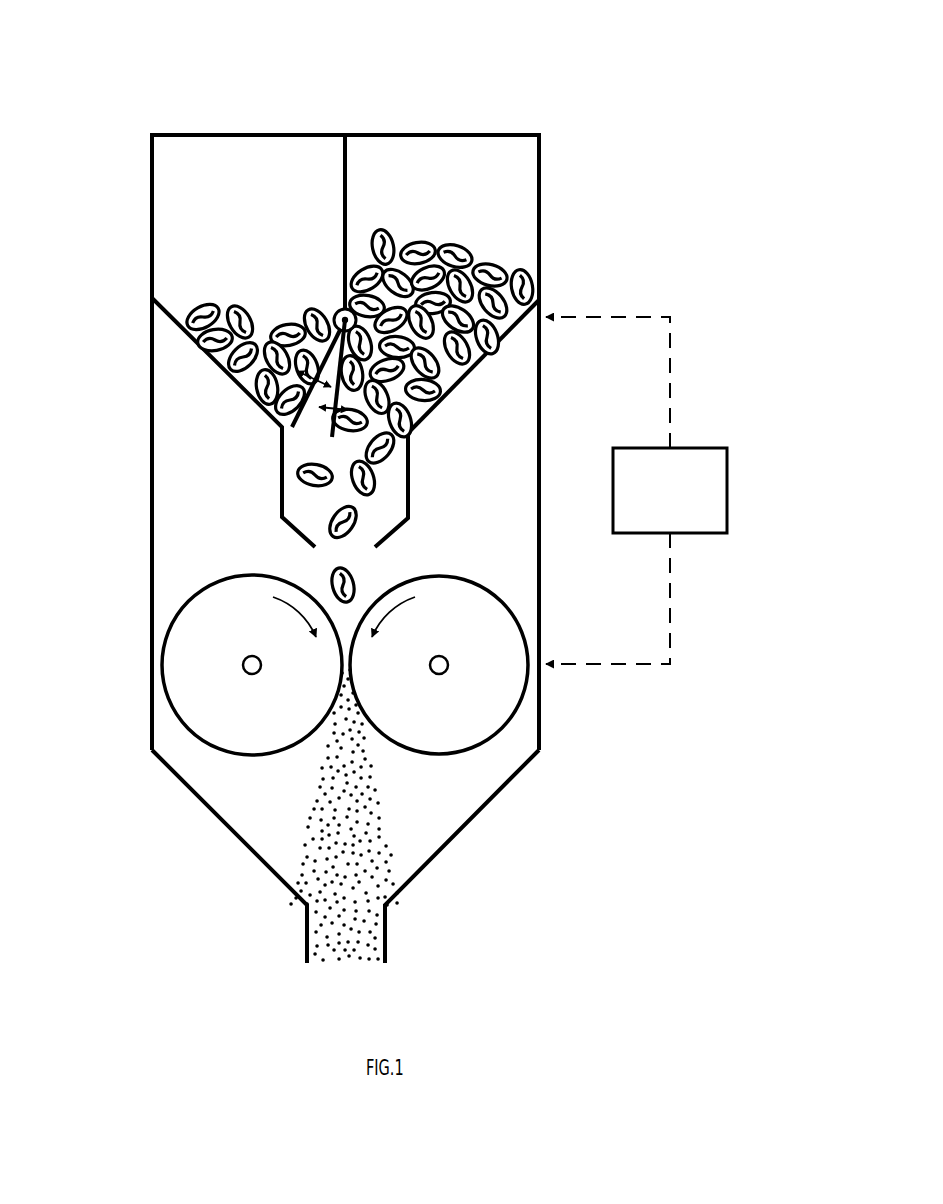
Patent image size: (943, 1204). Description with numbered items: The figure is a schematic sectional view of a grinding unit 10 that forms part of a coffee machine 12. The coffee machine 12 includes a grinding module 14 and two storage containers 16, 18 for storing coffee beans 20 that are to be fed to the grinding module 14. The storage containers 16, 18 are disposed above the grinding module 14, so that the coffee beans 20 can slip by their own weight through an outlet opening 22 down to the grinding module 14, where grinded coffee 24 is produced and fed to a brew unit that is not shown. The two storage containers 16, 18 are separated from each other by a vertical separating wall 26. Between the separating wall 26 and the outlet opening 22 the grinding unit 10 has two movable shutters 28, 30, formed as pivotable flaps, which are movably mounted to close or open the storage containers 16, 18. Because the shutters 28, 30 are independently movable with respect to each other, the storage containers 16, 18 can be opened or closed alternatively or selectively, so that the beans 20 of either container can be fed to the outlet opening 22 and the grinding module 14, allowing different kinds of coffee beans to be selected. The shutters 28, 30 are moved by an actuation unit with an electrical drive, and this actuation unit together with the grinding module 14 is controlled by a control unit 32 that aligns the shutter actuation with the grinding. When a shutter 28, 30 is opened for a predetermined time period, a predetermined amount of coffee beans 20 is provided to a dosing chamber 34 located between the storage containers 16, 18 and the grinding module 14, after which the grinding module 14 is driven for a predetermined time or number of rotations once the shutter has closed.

The grinding unit 10 is at (329, 518).
The coffee machine 12 is at (106, 70).
The grinding module 14 is at (126, 684).
The storage container 16 is at (456, 167).
The storage container 18 is at (237, 167).
The coffee beans 20 is at (385, 416).
The outlet opening 22 is at (318, 432).
The grinded coffee 24 is at (353, 840).
The separating wall 26 is at (350, 158).
The shutter 28 is at (277, 422).
The shutter 30 is at (418, 422).
The control unit 32 is at (727, 490).
The dosing chamber 34 is at (388, 486).